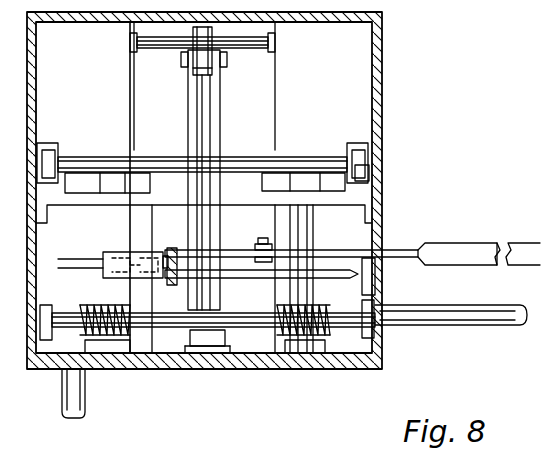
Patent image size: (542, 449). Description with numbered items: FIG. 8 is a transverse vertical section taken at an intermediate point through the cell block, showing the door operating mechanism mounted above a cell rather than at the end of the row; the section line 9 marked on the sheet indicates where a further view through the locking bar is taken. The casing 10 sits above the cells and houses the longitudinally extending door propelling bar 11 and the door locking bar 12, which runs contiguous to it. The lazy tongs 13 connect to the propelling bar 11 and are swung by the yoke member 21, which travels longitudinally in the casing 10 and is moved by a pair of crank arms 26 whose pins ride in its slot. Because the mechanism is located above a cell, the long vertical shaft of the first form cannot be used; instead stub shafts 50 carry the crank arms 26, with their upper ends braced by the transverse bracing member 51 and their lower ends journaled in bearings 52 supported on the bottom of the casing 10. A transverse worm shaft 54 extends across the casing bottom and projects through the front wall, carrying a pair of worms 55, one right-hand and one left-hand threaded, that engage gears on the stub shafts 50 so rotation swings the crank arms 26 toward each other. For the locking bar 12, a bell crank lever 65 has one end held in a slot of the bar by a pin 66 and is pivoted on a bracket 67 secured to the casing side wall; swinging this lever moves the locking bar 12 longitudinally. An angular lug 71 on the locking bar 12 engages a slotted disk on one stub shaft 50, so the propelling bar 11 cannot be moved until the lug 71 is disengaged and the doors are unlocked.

The section line 9- 9 is at (57, 192).
The casing 10 is at (353, 130).
The door propelling bar 11 is at (183, 327).
The door locking bar 12 is at (170, 282).
The lazy tongs 13 is at (208, 98).
The yoke member 21 is at (248, 158).
The crank arms 26 is at (375, 176).
The stub shafts 50 is at (303, 237).
The transverse bracing member 51 is at (100, 204).
The bearings 52 is at (105, 352).
The transverse worm shaft 54 is at (420, 327).
The worms 55 is at (80, 337).
The bell crank lever 65 is at (236, 258).
The pin 66 is at (172, 250).
The bracket 67 is at (372, 270).
The angular lug 71 is at (103, 272).